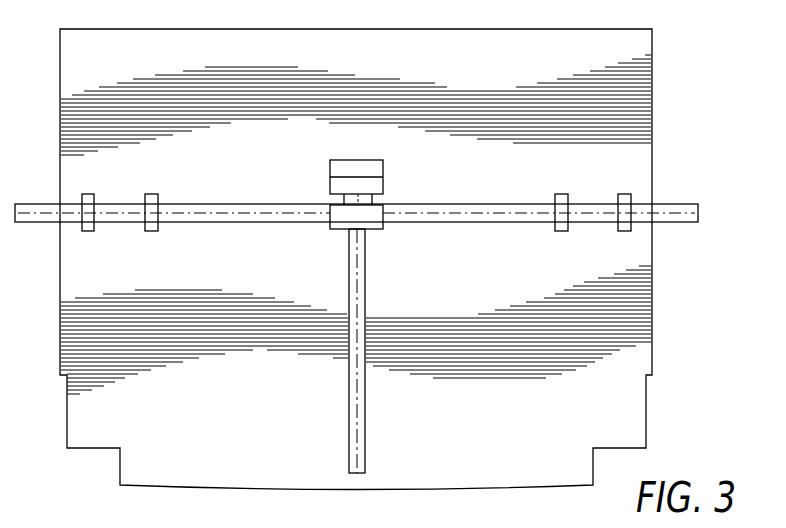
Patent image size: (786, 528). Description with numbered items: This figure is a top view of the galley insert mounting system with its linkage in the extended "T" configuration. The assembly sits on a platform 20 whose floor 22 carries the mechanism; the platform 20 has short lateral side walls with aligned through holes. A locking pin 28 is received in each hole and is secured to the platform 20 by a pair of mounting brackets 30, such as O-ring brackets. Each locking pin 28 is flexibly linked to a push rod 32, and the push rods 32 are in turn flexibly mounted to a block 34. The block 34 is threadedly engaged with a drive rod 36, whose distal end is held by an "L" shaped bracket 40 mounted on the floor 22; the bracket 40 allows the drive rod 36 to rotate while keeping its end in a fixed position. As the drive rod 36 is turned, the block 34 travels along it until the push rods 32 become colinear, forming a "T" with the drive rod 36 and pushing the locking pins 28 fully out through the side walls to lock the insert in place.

The platform 20 is at (646, 417).
The floor 22 is at (203, 453).
The locking pin 28 is at (117, 203).
The mounting brackets 30 is at (88, 232).
The push rod 32 is at (273, 203).
The block 34 is at (375, 228).
The drive rod 36 is at (365, 426).
The L shaped bracket 40 is at (375, 175).